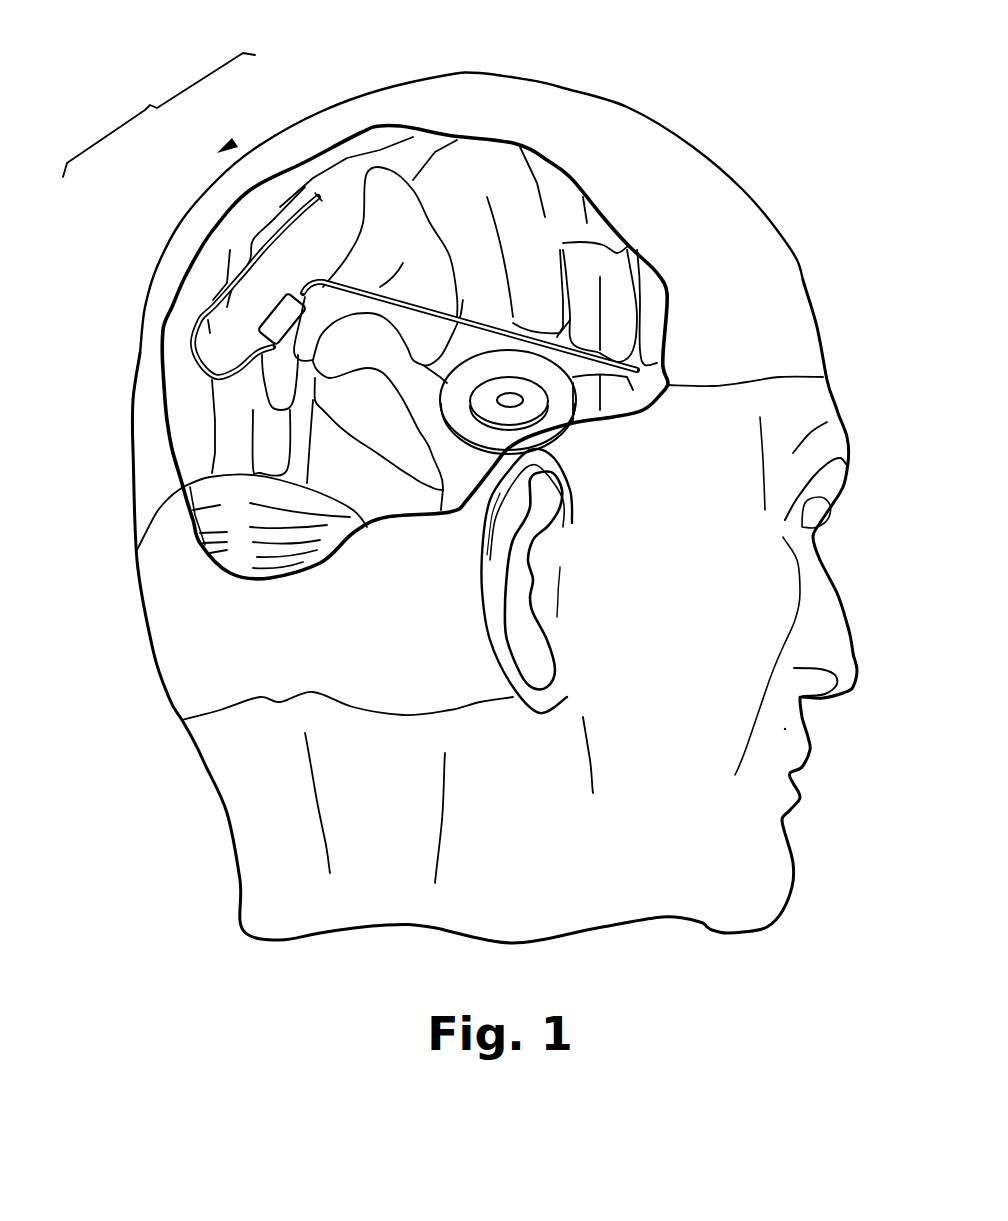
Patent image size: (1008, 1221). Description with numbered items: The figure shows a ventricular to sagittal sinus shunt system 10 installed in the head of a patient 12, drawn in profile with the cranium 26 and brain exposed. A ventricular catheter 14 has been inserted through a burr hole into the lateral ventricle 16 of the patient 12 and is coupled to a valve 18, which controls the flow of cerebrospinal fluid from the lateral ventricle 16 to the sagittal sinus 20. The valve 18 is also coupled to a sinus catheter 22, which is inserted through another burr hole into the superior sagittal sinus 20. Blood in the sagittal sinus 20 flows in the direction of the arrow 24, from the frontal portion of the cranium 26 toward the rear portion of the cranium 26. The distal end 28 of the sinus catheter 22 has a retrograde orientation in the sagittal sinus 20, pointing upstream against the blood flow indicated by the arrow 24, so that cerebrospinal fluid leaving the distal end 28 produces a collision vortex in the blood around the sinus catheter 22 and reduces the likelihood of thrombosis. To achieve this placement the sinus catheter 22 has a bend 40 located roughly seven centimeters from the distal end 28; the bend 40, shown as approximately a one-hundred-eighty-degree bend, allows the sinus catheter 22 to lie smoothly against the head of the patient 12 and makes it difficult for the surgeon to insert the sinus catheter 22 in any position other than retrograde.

The shunt system 10 is at (159, 115).
The patient 12 is at (826, 273).
The ventricular catheter 14 is at (523, 337).
The lateral ventricle 16 is at (828, 378).
The valve 18 is at (273, 350).
The sagittal sinus 20 is at (343, 187).
The sinus catheter 22 is at (192, 335).
The arrow 24 is at (222, 149).
The cranium 26 is at (490, 100).
The distal end 28 is at (313, 195).
The bend 40 is at (188, 373).